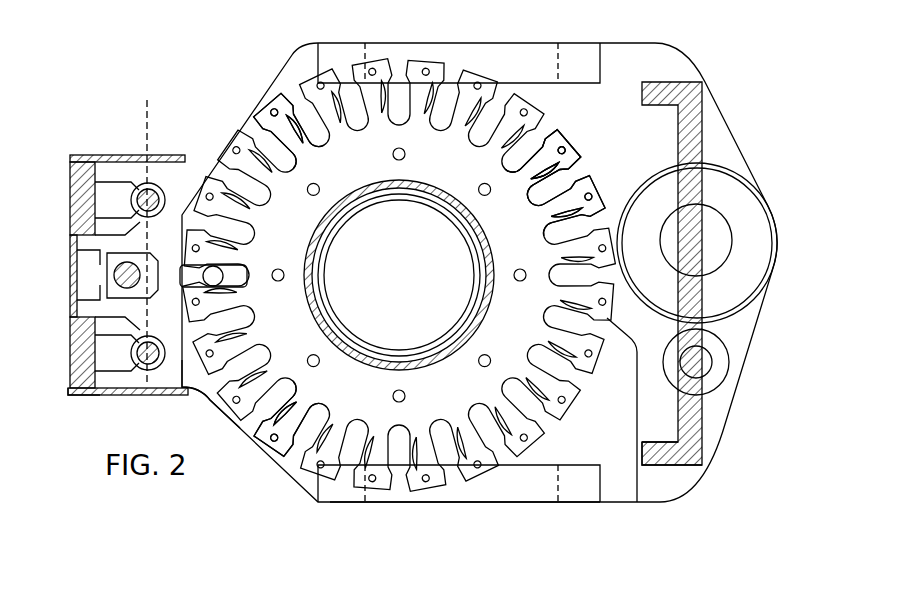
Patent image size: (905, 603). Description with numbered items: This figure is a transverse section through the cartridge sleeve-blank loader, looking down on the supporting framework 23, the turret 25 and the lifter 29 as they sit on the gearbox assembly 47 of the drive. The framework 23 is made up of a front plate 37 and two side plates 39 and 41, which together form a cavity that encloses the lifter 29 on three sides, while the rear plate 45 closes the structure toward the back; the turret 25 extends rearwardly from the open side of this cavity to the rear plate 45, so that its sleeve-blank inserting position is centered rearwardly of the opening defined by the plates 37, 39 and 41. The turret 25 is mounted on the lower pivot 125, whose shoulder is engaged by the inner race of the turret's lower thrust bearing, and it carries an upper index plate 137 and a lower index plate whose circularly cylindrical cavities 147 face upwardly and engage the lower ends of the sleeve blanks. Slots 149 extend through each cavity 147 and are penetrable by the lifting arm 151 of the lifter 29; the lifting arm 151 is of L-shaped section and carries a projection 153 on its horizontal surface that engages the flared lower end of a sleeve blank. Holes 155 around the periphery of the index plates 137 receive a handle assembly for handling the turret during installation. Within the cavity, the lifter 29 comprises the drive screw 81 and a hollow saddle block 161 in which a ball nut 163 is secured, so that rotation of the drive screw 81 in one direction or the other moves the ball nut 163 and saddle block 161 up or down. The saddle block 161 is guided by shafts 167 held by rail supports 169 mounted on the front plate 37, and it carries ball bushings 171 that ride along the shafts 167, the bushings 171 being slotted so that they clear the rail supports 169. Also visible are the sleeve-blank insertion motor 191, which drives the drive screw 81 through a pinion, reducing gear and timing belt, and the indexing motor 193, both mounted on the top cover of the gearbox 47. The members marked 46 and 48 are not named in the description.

The supporting framework 23 is at (72, 396).
The turret 25 is at (382, 502).
The lifter 29 is at (172, 213).
The front plate 37 is at (78, 373).
The side plate 39 is at (145, 157).
The side plate 41 is at (140, 397).
The rear plate 45 is at (697, 423).
The housing 46 is at (518, 44).
The gearbox assembly 47 is at (713, 452).
The lower block 48 is at (403, 492).
The drive screw 81 is at (130, 290).
The lower pivot 125 is at (377, 183).
The upper index plate 137 is at (612, 122).
The cavity 147 is at (254, 438).
The slot 149 is at (536, 140).
The lifting arm 151 is at (235, 288).
The projection 153 is at (232, 268).
The hole 155 is at (572, 152).
The saddle block 161 is at (173, 382).
The ball nut 163 is at (105, 258).
The shaft 167 is at (123, 156).
The rail support 169 is at (93, 347).
The ball bushing 171 is at (162, 188).
The sleeve-blank insertion motor 191 is at (728, 192).
The indexing motor 193 is at (723, 362).